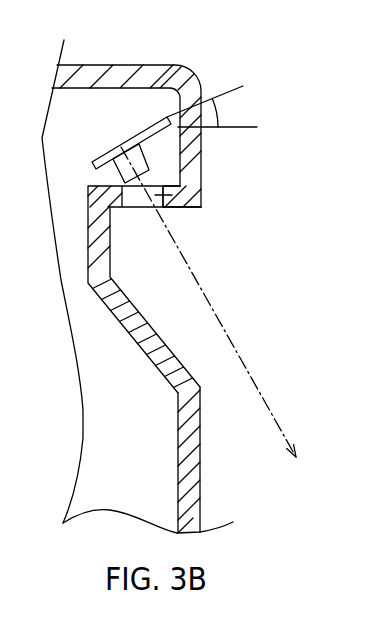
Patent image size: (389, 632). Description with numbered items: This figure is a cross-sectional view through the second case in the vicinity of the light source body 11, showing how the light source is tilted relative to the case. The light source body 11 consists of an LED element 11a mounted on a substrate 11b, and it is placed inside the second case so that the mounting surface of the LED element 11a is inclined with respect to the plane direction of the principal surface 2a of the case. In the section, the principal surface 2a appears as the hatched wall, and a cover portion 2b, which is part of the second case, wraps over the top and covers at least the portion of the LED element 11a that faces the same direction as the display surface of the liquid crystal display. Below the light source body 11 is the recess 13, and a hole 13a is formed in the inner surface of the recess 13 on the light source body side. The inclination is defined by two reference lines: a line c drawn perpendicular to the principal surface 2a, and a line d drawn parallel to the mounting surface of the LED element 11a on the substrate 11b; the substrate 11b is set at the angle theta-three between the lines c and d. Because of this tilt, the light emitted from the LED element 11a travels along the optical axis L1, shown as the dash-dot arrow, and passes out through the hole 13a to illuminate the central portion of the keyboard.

The principal surface 2a is at (201, 478).
The cover portion 2b is at (198, 160).
The light source body 11 is at (124, 101).
The LED element 11a is at (128, 140).
The substrate 11b is at (99, 157).
The recess 13 is at (110, 250).
The hole 13a is at (183, 200).
The line c is at (238, 127).
The line d is at (243, 86).
The optical axis L1 is at (228, 338).